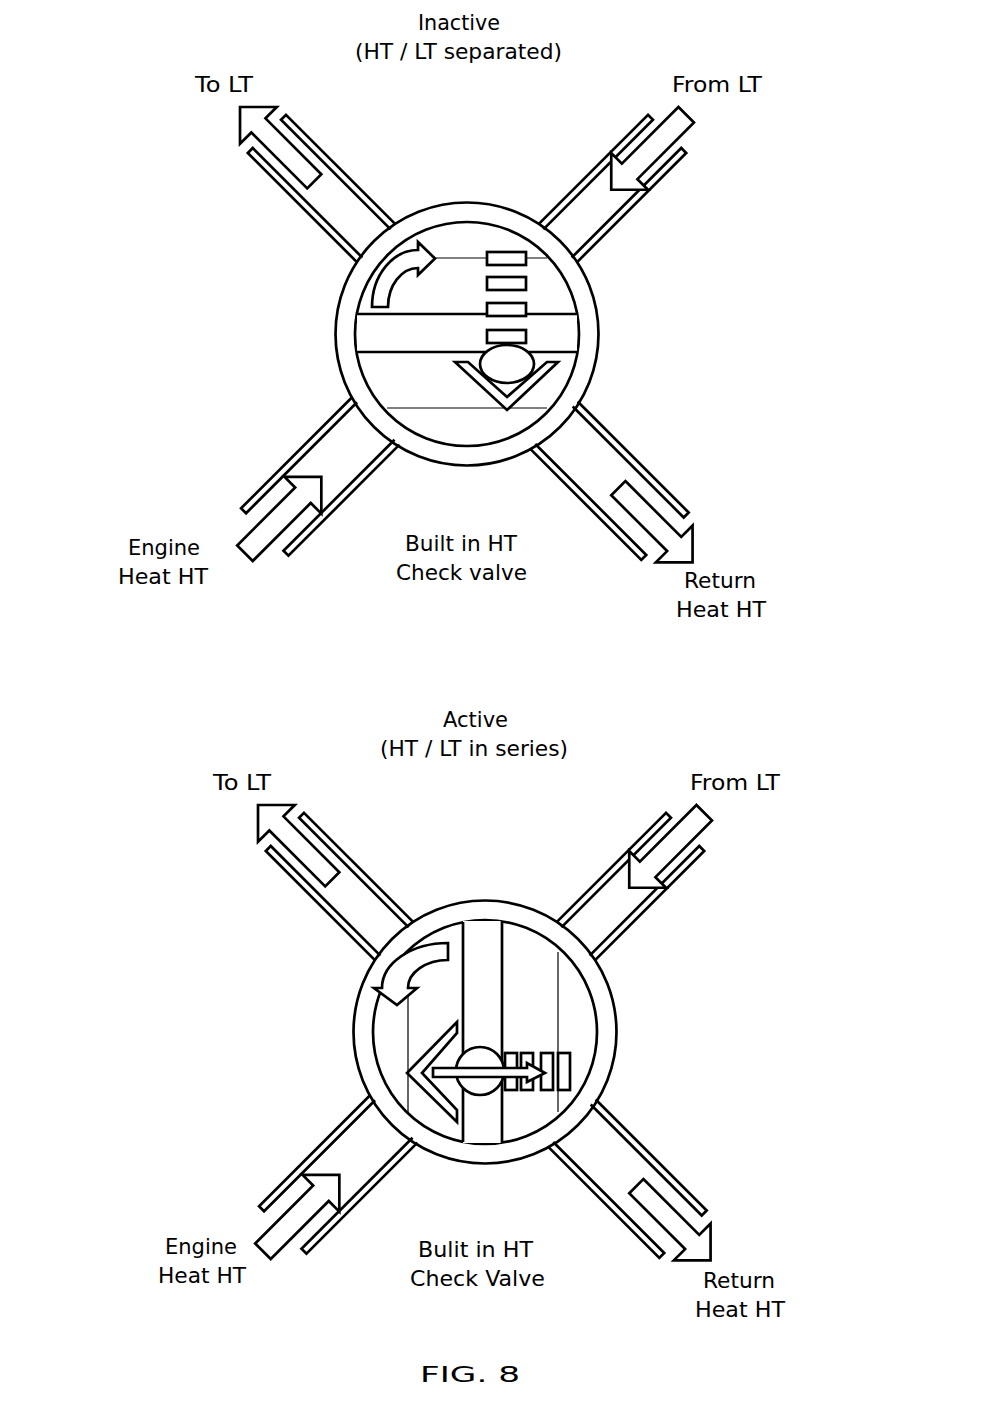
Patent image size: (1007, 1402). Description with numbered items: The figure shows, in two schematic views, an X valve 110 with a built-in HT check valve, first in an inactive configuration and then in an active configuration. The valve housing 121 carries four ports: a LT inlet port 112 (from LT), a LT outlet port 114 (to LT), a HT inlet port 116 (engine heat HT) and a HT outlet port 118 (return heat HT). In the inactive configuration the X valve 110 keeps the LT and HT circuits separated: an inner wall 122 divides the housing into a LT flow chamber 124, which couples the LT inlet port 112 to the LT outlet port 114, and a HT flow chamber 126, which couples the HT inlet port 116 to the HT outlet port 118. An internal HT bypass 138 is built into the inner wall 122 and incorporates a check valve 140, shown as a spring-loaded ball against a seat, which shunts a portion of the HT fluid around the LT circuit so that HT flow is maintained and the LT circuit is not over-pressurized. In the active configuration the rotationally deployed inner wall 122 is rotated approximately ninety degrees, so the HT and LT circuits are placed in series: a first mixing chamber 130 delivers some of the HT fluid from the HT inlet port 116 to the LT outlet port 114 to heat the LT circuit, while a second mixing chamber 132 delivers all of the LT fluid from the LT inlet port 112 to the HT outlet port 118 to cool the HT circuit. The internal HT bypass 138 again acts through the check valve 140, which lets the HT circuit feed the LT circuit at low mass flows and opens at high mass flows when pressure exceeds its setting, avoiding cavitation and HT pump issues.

The X valve 110 is at (557, 117).
The LT inlet port 112 is at (706, 68).
The LT outlet port 114 is at (228, 69).
The HT inlet port 116 is at (160, 530).
The HT outlet port 118 is at (668, 484).
The valve housing 121 is at (343, 277).
The inner wall 122 is at (335, 340).
The LT flow chamber 124 is at (557, 291).
The HT flow chamber 126 is at (568, 371).
The first mixing chamber 130 is at (453, 1012).
The second mixing chamber 132 is at (527, 1038).
The internal HT bypass 138 is at (487, 391).
The check valve 140 is at (495, 720).